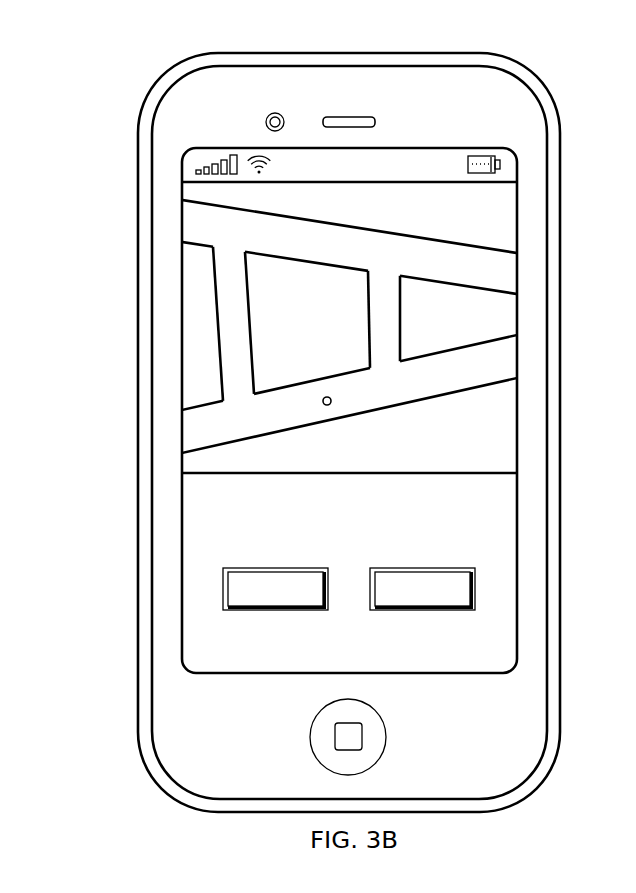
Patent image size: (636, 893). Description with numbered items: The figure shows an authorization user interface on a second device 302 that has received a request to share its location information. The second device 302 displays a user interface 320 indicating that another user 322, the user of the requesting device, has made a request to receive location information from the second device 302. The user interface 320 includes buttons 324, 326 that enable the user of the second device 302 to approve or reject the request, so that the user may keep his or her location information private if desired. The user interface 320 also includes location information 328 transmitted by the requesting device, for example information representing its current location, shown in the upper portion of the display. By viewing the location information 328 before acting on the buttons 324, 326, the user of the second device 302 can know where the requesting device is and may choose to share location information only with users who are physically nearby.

The second device 302 is at (535, 77).
The user interface 320 is at (124, 180).
The another user 322 is at (503, 558).
The button 324 is at (277, 612).
The button 326 is at (422, 612).
The location information 328 is at (569, 176).